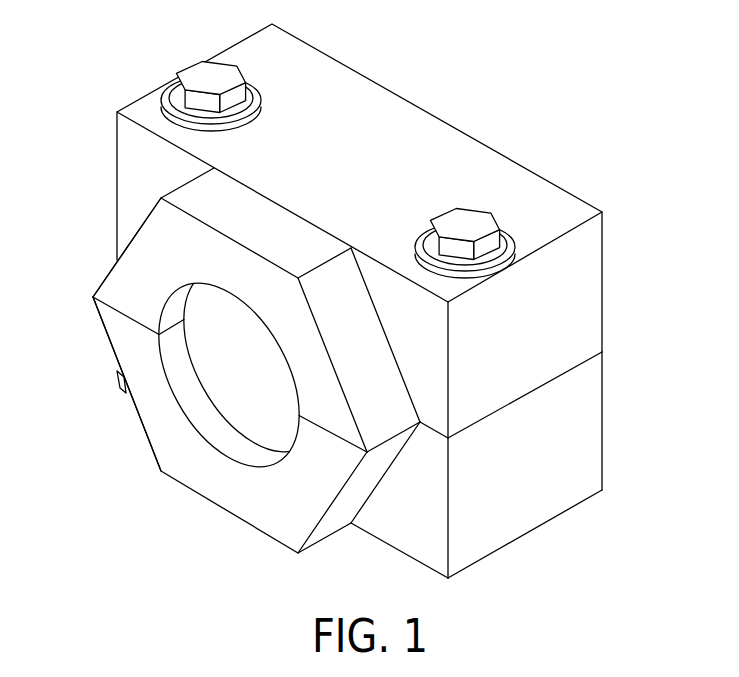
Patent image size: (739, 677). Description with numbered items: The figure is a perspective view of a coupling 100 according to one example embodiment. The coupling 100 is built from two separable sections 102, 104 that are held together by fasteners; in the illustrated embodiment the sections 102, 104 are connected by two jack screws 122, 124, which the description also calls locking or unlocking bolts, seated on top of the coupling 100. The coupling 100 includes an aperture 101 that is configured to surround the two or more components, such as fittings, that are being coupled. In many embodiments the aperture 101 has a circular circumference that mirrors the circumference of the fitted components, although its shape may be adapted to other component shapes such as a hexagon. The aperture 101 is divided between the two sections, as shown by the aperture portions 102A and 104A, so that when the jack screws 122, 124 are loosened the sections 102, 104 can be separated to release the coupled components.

The coupling 100 is at (116, 64).
The aperture 101 is at (251, 392).
The section 102 is at (557, 307).
The aperture portion of section 102A is at (167, 300).
The section 104 is at (562, 448).
The aperture portion of section 104A is at (180, 410).
The jack screw 122 is at (467, 220).
The jack screw 124 is at (220, 82).